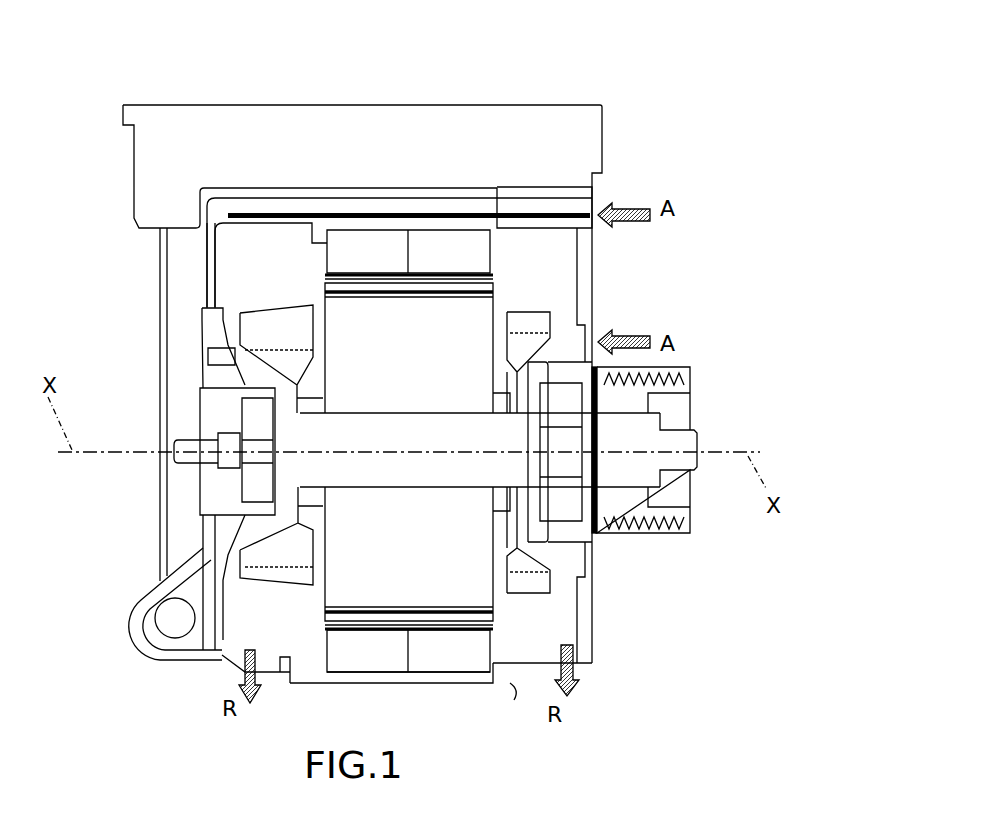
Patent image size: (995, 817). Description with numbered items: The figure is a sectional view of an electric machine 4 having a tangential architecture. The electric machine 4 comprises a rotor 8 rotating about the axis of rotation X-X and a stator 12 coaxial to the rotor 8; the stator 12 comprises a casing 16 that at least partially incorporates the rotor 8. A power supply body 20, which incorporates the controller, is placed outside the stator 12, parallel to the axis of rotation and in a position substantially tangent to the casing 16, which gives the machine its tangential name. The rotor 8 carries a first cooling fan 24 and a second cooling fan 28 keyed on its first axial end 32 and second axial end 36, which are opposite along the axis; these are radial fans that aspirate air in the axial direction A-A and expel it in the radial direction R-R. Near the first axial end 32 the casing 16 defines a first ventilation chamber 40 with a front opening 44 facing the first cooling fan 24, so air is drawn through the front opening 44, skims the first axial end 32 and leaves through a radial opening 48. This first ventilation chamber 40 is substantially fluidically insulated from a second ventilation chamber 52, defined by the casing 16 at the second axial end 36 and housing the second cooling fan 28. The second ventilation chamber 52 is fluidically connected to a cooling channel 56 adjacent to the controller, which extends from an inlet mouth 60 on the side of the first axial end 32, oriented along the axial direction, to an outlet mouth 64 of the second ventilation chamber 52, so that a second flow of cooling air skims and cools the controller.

The electric machine 4 is at (270, 86).
The rotor 8 is at (422, 467).
The stator 12 is at (610, 259).
The casing 16 is at (210, 258).
The power supply body 20 is at (542, 140).
The first cooling fan 24 is at (557, 625).
The second cooling fan 28 is at (263, 564).
The first axial end 32 is at (625, 495).
The second axial end 36 is at (233, 482).
The first ventilation chamber 40 is at (578, 282).
The front opening 44 is at (595, 355).
The radial opening 48 is at (591, 671).
The second ventilation chamber 52 is at (265, 255).
The cooling channel 56 is at (402, 208).
The inlet mouth 60 is at (599, 199).
The outlet mouth 64 is at (213, 667).